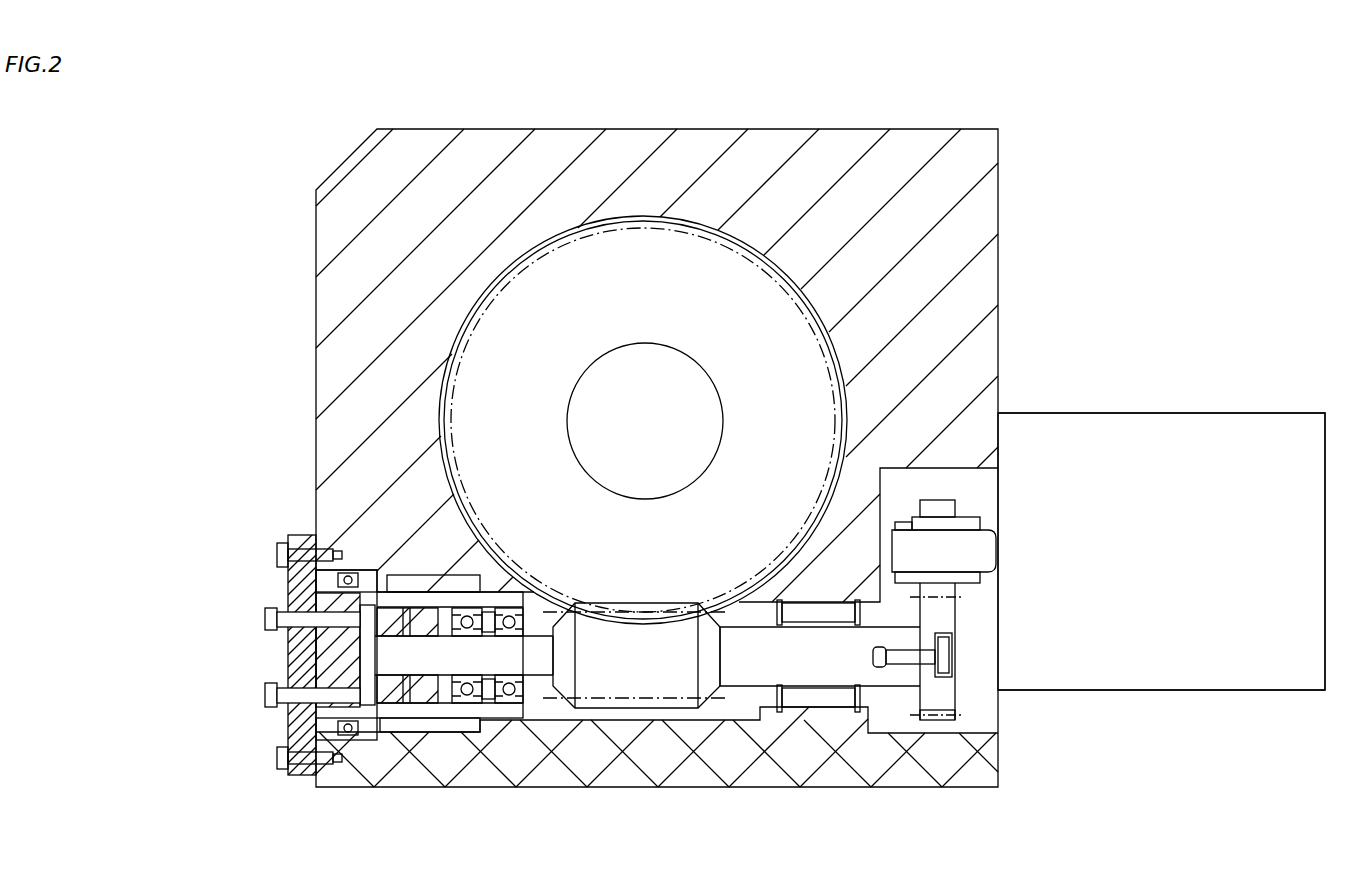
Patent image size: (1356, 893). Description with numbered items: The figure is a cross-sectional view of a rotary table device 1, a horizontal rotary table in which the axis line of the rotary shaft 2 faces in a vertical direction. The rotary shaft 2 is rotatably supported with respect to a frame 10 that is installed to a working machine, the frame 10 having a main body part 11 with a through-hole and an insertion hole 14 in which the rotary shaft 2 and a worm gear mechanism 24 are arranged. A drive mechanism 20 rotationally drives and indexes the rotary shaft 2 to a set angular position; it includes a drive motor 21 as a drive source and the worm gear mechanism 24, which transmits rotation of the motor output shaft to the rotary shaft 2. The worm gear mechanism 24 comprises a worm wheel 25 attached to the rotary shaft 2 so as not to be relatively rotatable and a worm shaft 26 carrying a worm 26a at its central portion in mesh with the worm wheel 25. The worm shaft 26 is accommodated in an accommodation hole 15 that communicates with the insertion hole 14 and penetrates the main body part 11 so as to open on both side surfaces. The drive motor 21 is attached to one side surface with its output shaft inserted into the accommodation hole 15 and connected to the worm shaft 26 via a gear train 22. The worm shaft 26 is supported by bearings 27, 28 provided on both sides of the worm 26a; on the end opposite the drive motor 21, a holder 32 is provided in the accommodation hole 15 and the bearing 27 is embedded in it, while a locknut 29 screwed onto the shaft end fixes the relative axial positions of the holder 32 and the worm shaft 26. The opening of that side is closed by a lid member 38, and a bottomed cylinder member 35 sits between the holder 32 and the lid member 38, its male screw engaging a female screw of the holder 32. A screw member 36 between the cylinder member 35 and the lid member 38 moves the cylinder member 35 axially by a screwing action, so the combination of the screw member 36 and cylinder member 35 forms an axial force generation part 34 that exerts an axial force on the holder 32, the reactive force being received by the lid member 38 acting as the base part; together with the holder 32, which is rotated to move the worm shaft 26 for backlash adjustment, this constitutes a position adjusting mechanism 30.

The rotary table device 1 is at (279, 138).
The rotary shaft 2 is at (660, 410).
The frame 10 is at (1025, 146).
The main body part 11 is at (980, 215).
The insertion hole 14 is at (853, 353).
The accommodation hole 15 is at (552, 728).
The drive mechanism 20 is at (1041, 386).
The drive motor 21 is at (1100, 445).
The gear train 22 is at (978, 630).
The worm gear mechanism 24 is at (713, 710).
The worm wheel 25 is at (635, 275).
The worm shaft 26 is at (858, 677).
The worm 26a is at (642, 627).
The bearing 27 is at (490, 707).
The bearing 28 is at (835, 720).
The locknut 29 is at (390, 587).
The flange assembly 30 is at (251, 483).
The holder 32 is at (442, 746).
The axial force generation part 34 is at (247, 544).
The cylinder member 35 is at (287, 725).
The screw member 36 is at (275, 615).
The lid member 38 is at (288, 791).